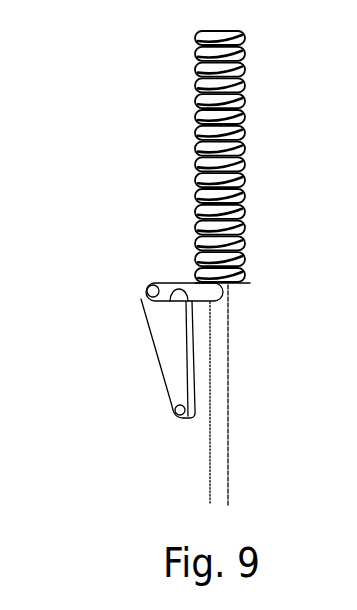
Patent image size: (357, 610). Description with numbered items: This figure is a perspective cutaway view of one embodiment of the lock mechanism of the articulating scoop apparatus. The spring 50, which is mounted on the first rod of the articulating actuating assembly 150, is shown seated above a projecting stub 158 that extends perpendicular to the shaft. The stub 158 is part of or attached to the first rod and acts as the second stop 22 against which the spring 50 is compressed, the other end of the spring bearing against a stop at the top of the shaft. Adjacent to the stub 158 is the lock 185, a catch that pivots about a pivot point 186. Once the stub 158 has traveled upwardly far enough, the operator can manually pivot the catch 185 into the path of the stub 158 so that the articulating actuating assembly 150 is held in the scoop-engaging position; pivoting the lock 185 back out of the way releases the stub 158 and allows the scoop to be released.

The spring 50 is at (197, 148).
The second stop 22 is at (116, 278).
The stub 158 is at (148, 288).
The lock 185 is at (170, 350).
The pivot point 186 is at (172, 405).
The articulating actuating assembly 150 is at (228, 377).